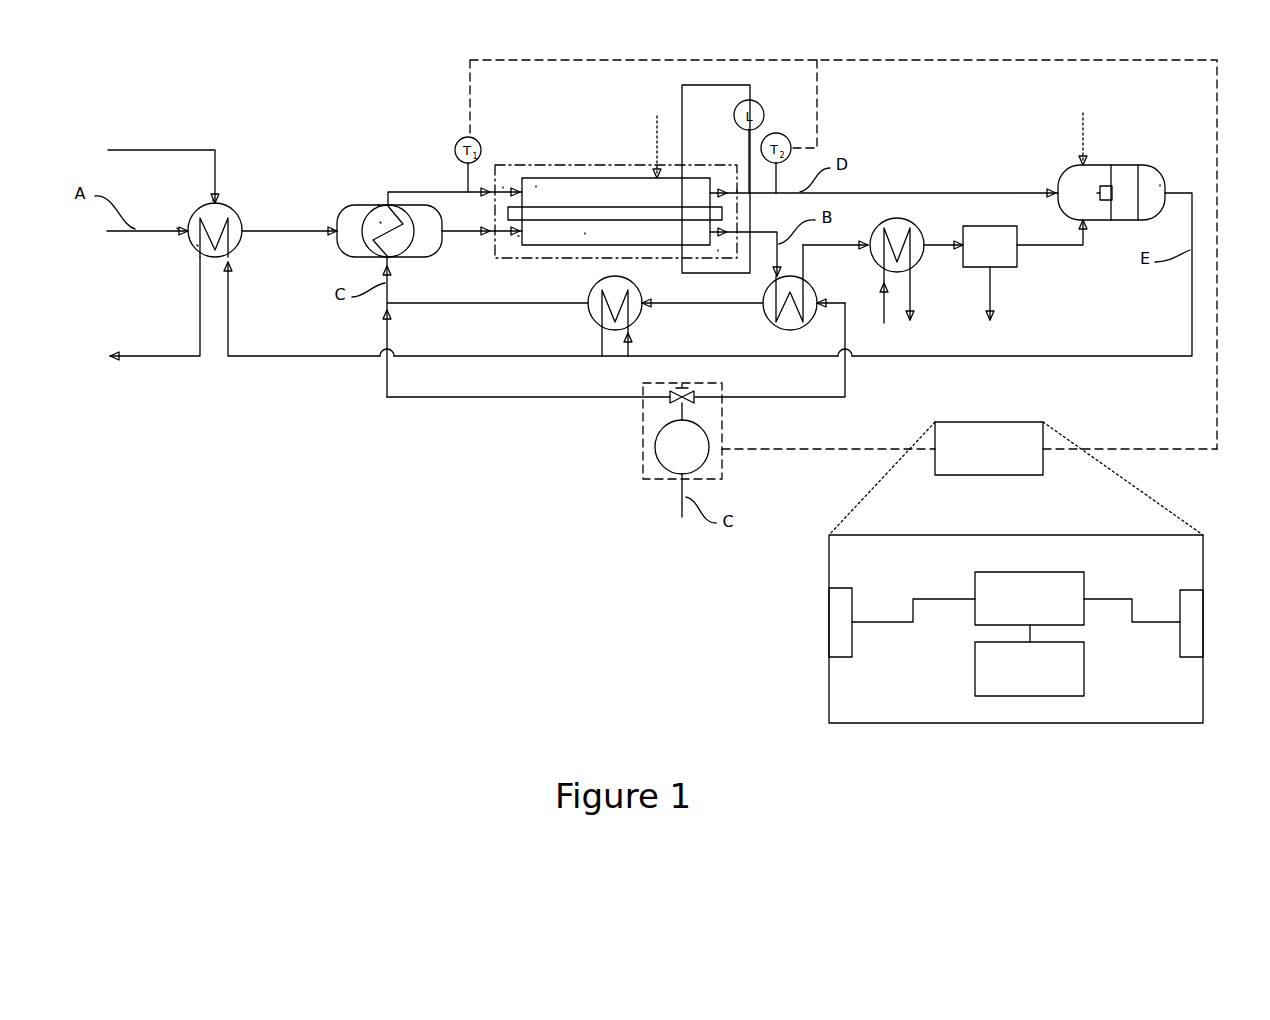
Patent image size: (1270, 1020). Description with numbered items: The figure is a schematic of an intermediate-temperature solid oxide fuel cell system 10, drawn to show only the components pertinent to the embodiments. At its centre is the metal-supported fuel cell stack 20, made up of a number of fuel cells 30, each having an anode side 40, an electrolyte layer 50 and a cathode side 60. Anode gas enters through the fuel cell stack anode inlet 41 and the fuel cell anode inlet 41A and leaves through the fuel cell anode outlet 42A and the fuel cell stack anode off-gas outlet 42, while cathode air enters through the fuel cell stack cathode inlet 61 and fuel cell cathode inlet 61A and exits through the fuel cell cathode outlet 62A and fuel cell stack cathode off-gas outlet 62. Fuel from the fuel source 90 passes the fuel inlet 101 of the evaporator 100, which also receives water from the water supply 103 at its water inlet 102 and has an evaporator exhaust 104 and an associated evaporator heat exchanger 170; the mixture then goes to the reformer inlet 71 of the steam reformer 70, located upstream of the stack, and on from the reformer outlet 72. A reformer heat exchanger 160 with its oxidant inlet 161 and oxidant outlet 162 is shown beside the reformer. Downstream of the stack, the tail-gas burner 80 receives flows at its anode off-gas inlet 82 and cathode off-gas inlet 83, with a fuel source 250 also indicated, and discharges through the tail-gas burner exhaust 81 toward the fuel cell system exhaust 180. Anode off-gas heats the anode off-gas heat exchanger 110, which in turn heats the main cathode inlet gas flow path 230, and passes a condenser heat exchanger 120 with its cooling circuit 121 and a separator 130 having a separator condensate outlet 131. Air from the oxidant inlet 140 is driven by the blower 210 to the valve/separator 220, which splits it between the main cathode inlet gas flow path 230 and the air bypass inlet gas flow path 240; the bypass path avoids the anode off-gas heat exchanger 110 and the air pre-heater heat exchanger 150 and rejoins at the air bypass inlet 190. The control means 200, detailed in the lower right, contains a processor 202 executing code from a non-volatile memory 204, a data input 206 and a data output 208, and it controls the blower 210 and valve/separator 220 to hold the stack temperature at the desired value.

The fuel cell system 10 is at (397, 70).
The fuel cell stack 20 is at (625, 163).
The fuel cell 30 is at (657, 136).
The anode side 40 is at (585, 233).
The fuel cell stack anode inlet 41 is at (478, 234).
The fuel cell anode inlet 41A is at (518, 236).
The fuel cell stack anode off-gas outlet 42 is at (737, 250).
The fuel cell anode outlet 42A is at (718, 250).
The electrolyte layer 50 is at (560, 211).
The cathode side 60 is at (540, 196).
The fuel cell stack cathode inlet 61 is at (503, 187).
The fuel cell cathode inlet 61A is at (536, 186).
The fuel cell stack cathode off-gas outlet 62 is at (737, 190).
The fuel cell cathode outlet 62A is at (720, 188).
The steam reformer 70 is at (340, 212).
The reformer inlet 71 is at (333, 230).
The reformer outlet 72 is at (455, 190).
The tail-gas burner 80 is at (1062, 170).
The tail-gas burner exhaust 81 is at (1160, 185).
The anode off-gas inlet 82 is at (1085, 224).
The cathode off-gas inlet 83 is at (1057, 190).
The fuel source 90 is at (129, 230).
The evaporator 100 is at (232, 212).
The fuel inlet 101 is at (180, 229).
The water inlet 102 is at (213, 200).
The water supply 103 is at (142, 171).
The evaporator exhaust 104 is at (250, 234).
The anode off-gas heat exchanger 110 is at (766, 316).
The condenser heat exchanger 120 is at (916, 264).
The cooling circuit 121 is at (882, 314).
The separator 130 is at (970, 246).
The separator condensate outlet 131 is at (990, 306).
The oxidant inlet 140 is at (682, 505).
The air pre-heater heat exchanger 150 is at (590, 318).
The reformer heat exchanger 160 is at (378, 205).
The reformer heat exchanger oxidant inlet 161 is at (383, 265).
The reformer heat exchanger oxidant outlet 162 is at (380, 222).
The evaporator heat exchanger 170 is at (197, 245).
The fuel cell system exhaust 180 is at (132, 311).
The air bypass inlet 190 is at (385, 312).
The control means 200 is at (969, 572).
The processor 202 is at (1029, 607).
The non-volatile memory 204 is at (1029, 669).
The data input 206 is at (1203, 620).
The data output 208 is at (829, 618).
The blower 210 is at (660, 470).
The valve/separator 220 is at (700, 400).
The main cathode inlet gas flow path 230 is at (768, 398).
The air bypass inlet gas flow path 240 is at (577, 398).
The fuel source 250 is at (1083, 129).